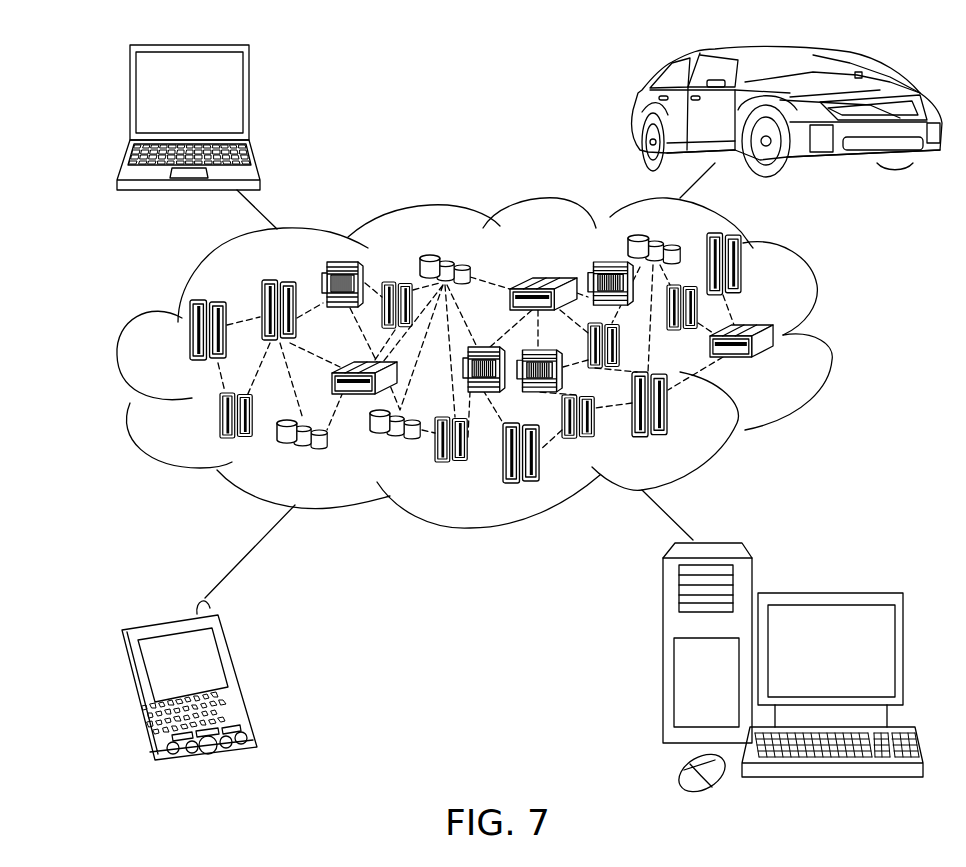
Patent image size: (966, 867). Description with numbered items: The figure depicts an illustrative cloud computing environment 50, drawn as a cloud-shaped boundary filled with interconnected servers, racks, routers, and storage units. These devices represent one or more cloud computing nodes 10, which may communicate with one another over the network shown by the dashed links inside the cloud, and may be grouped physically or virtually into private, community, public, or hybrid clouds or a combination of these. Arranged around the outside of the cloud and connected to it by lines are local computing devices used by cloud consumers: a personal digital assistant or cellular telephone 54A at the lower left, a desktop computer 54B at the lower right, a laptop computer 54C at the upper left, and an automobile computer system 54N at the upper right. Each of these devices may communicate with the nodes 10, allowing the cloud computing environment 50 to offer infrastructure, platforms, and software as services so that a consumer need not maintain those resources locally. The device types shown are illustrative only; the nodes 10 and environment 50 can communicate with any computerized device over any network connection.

The cloud computing node 10 is at (778, 367).
The cloud computing environment 50 is at (827, 338).
The personal digital assistant or cellular telephone 54A is at (242, 673).
The desktop computer 54B is at (830, 593).
The laptop computer 54C is at (250, 100).
The automobile computer system 54N is at (633, 113).